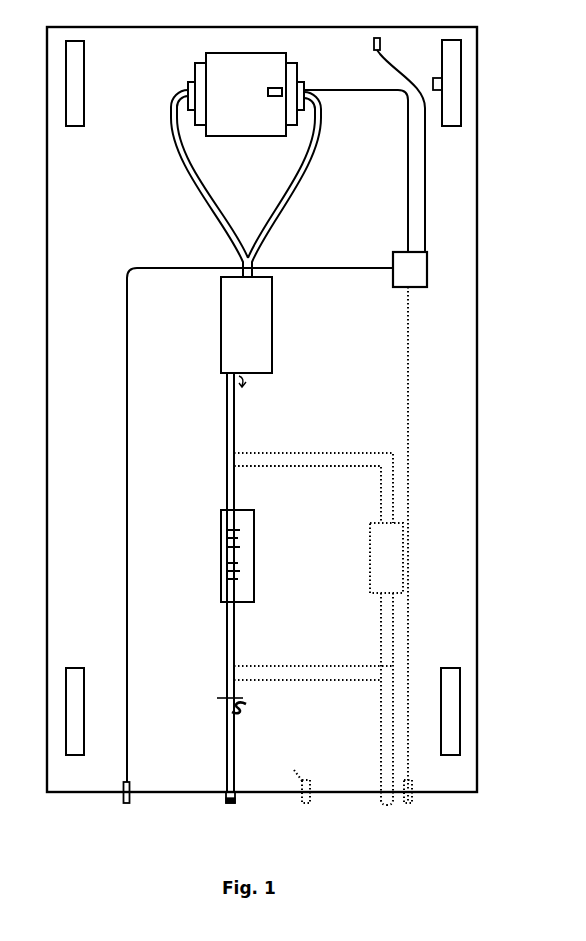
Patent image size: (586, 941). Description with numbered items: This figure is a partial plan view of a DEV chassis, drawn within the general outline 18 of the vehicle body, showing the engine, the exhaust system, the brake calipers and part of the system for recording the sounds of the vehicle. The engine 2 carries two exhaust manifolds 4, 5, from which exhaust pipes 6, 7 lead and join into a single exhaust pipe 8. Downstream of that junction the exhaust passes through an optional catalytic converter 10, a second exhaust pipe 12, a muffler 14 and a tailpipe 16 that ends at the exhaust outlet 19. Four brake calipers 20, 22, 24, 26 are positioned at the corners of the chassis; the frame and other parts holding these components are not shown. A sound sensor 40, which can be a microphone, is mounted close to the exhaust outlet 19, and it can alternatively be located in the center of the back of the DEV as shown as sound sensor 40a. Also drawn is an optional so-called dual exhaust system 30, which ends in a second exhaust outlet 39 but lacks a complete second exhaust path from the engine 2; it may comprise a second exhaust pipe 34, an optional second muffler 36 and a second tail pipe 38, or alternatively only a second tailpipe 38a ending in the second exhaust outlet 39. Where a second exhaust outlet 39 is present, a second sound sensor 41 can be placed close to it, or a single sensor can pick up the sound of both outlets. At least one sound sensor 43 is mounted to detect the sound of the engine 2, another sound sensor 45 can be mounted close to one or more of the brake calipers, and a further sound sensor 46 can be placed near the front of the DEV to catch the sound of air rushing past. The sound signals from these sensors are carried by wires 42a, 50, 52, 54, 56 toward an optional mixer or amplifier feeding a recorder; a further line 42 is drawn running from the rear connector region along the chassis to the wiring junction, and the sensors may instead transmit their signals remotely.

The engine 2 is at (245, 59).
The exhaust manifold 4 is at (200, 63).
The exhaust manifold 5 is at (291, 63).
The exhaust pipe 6 is at (172, 122).
The exhaust pipe 7 is at (284, 193).
The single exhaust pipe 8 is at (242, 261).
The catalytic converter 10 is at (257, 330).
The second exhaust pipe 12 is at (236, 417).
The muffler 14 is at (227, 553).
The tailpipe 16 is at (245, 710).
The general outline of the body of the vehicle 18 is at (478, 342).
The exhaust outlet 19 is at (231, 803).
The brake caliper 20 is at (80, 710).
The brake caliper 22 is at (84, 48).
The brake caliper 24 is at (450, 47).
The brake caliper 26 is at (450, 710).
The dual exhaust system 30 is at (352, 448).
The second exhaust pipe 34 is at (319, 467).
The second muffler 36 is at (376, 565).
The second tail pipe 38 is at (381, 711).
The second tailpipe 38a is at (321, 666).
The second exhaust outlet 39 is at (387, 805).
The sound sensor 40 is at (126, 803).
The sound sensor 40a is at (306, 803).
The second sound sensor 41 is at (410, 803).
The supply tube 42 is at (127, 467).
The wire 42a is at (300, 768).
The sound sensor 43 is at (268, 92).
The sound sensor 45 is at (435, 80).
The sound sensor 46 is at (374, 45).
The wire 50 is at (410, 410).
The wire 52 is at (410, 127).
The wire 54 is at (426, 158).
The wire 56 is at (402, 74).